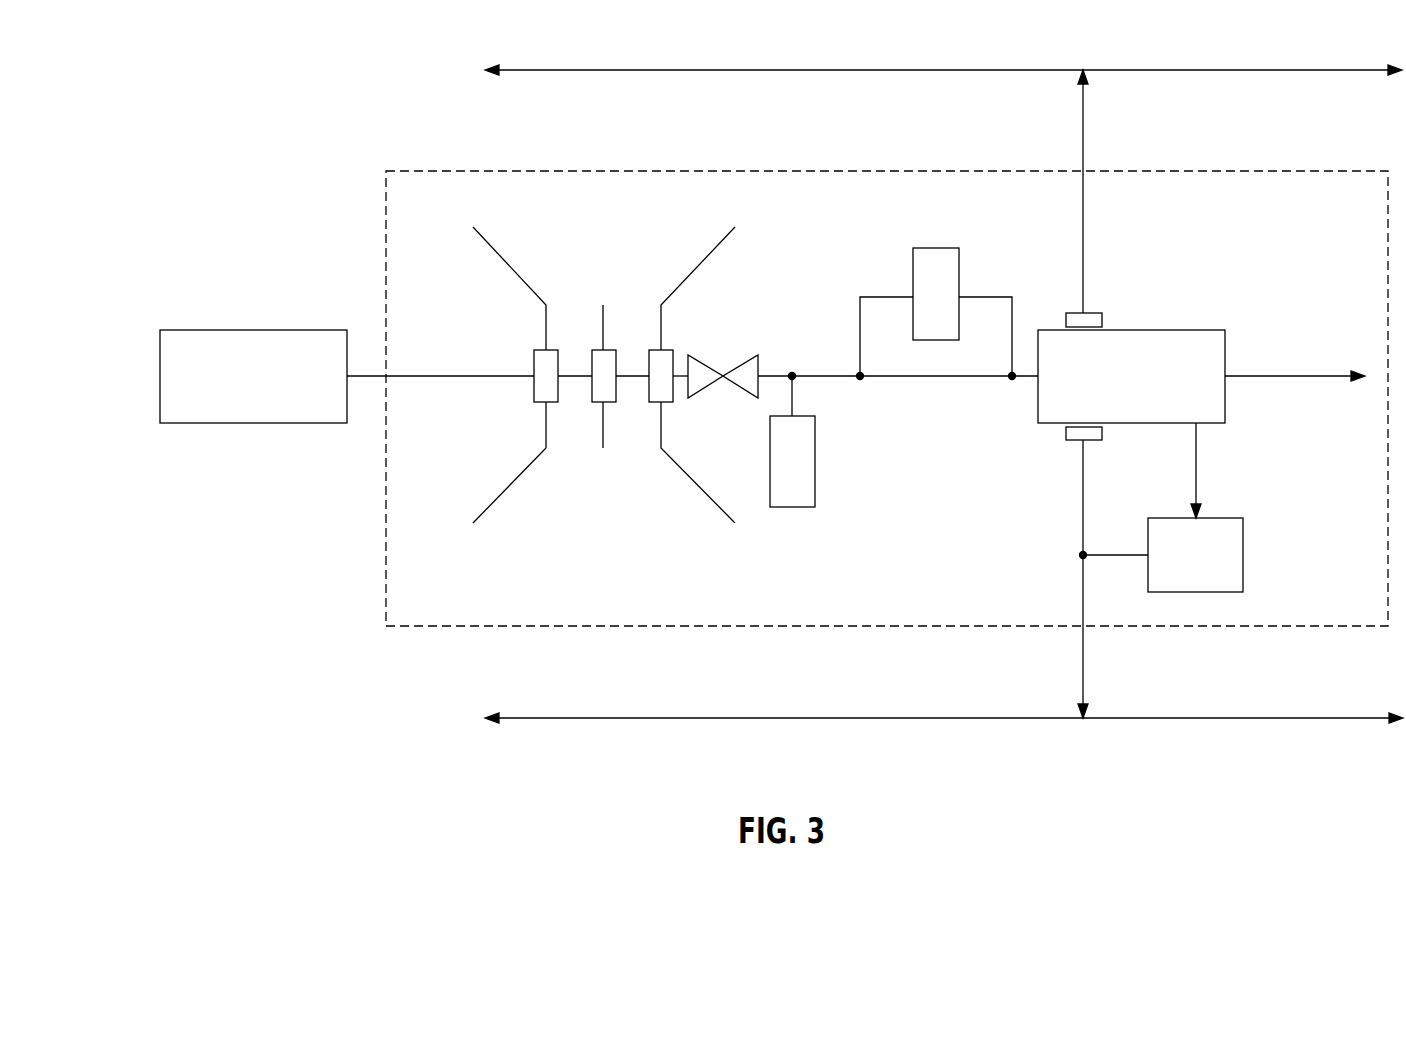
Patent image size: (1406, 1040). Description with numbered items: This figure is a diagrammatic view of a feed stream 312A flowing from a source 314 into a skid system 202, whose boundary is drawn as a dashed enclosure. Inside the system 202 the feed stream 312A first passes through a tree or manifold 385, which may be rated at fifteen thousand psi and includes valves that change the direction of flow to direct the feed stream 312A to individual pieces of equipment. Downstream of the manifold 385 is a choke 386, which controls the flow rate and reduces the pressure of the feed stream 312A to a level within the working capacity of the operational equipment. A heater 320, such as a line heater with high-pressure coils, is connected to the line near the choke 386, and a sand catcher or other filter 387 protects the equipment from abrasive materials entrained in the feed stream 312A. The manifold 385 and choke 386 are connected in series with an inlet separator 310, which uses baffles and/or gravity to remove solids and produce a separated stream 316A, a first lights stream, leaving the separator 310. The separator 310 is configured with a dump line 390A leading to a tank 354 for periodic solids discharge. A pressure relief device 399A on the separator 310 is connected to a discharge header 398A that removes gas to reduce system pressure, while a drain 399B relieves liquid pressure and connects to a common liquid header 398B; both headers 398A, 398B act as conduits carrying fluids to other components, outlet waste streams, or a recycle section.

The skid system 202 is at (266, 156).
The source 314 is at (252, 330).
The feed stream 312A is at (463, 376).
The tree or manifold 385 is at (622, 272).
The choke 386 is at (723, 376).
The heater 320 is at (790, 507).
The filter 387 is at (935, 248).
The inlet separator 310 is at (1172, 330).
The pressure relief device 399A is at (1090, 313).
The drain 399B is at (1090, 440).
The dump line 390A is at (1083, 503).
The tank 354 is at (1222, 518).
The separated stream 316A is at (1315, 376).
The discharge line or header 398A is at (688, 70).
The common liquid header 398B is at (688, 718).